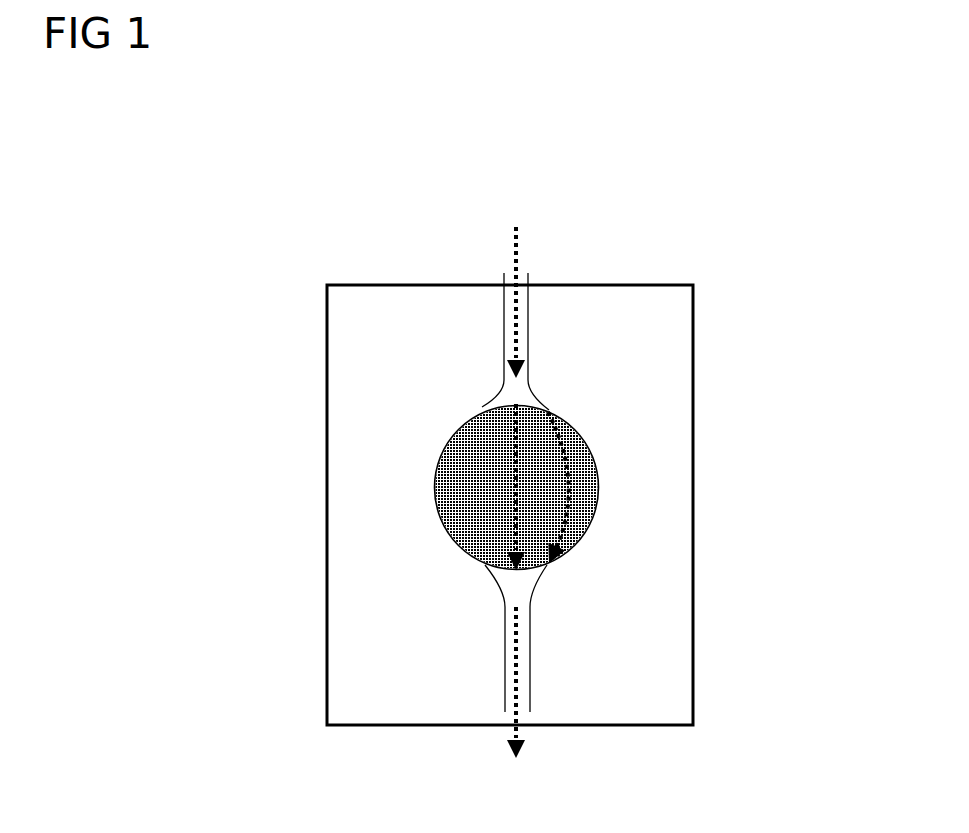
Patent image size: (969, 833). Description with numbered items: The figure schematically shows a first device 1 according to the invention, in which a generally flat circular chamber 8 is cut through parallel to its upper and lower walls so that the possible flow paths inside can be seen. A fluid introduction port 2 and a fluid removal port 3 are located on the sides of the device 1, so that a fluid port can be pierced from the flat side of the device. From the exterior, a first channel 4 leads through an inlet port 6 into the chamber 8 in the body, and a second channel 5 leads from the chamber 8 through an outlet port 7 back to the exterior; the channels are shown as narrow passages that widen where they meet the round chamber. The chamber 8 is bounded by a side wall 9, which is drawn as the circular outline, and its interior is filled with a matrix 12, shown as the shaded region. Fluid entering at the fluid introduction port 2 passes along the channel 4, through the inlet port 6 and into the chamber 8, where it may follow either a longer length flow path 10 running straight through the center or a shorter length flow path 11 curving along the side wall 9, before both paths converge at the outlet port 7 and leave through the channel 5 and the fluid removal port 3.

The device 1 is at (602, 322).
The fluid introduction port 2 is at (527, 260).
The fluid removal port 3 is at (533, 727).
The channel 4 is at (518, 345).
The channel 5 is at (518, 653).
The inlet port 6 is at (515, 392).
The outlet port 7 is at (518, 582).
The chamber 8 is at (553, 487).
The side wall 9 is at (600, 462).
The longer length flow path 10 is at (515, 512).
The shorter length flow path 11 is at (565, 512).
The matrix 12 is at (465, 462).